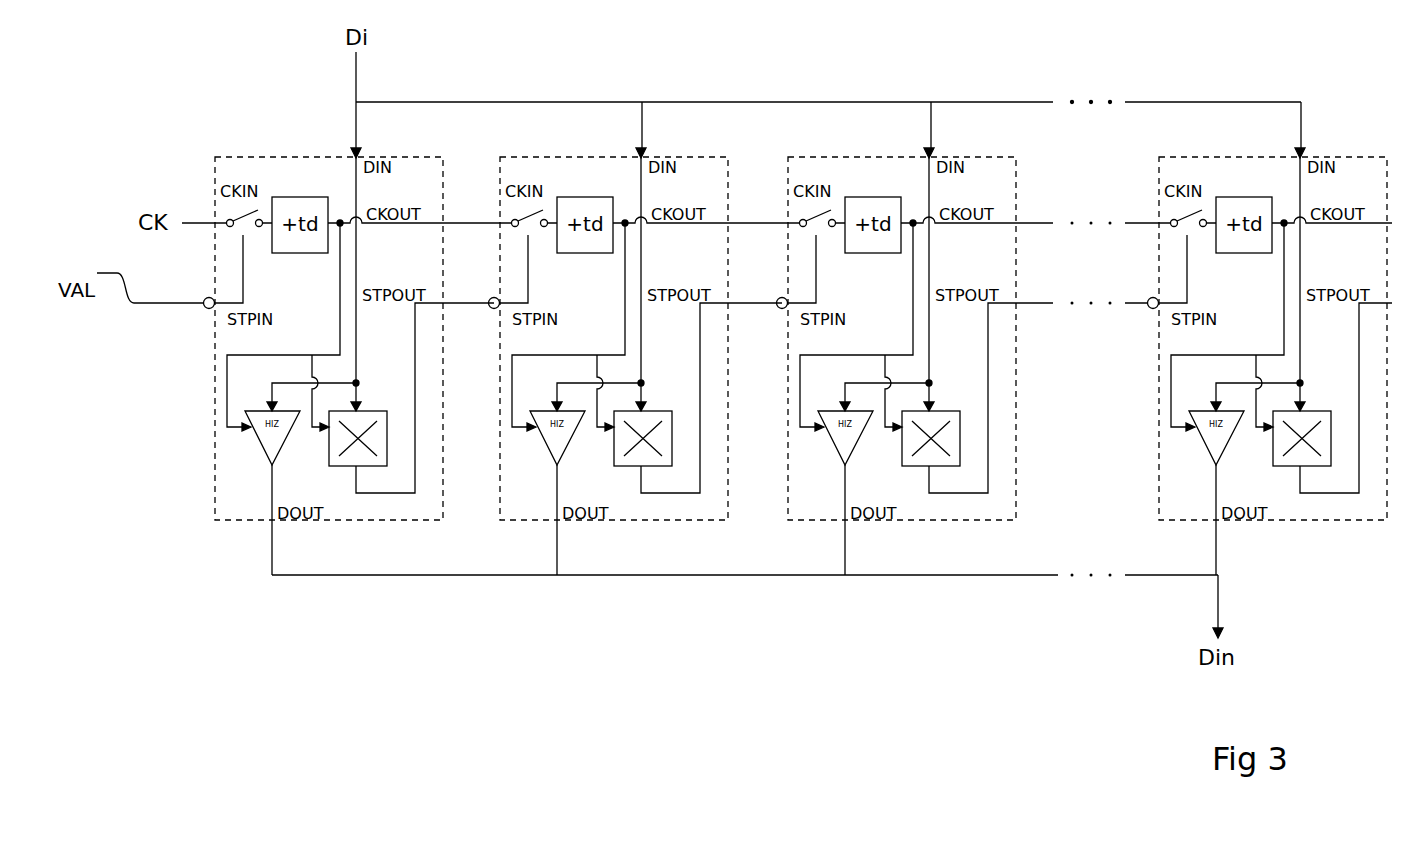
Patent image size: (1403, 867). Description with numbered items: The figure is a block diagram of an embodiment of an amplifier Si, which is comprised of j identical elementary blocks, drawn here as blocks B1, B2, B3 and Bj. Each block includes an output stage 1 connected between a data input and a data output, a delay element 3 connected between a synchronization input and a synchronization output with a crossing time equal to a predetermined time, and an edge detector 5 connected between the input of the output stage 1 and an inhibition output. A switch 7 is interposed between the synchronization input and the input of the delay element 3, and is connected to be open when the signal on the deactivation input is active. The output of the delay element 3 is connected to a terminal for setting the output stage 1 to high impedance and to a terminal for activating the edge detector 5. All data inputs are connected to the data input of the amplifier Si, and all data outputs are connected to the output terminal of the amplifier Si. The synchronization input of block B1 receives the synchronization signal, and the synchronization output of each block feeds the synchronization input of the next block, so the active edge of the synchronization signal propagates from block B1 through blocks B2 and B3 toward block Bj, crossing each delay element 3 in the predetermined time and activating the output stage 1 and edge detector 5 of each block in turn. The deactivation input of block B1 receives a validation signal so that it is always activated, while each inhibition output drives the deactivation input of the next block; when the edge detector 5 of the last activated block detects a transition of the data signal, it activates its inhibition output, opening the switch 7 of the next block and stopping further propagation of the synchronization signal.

The output stage 1 is at (242, 450).
The delay element 3 is at (300, 181).
The edge detector 5 is at (345, 514).
The switch 7 is at (221, 189).
The first elementary block B1 is at (311, 363).
The second elementary block B2 is at (522, 520).
The third elementary block B3 is at (817, 522).
The j-th elementary block Bj is at (1350, 522).
The amplifier Si is at (1025, 80).